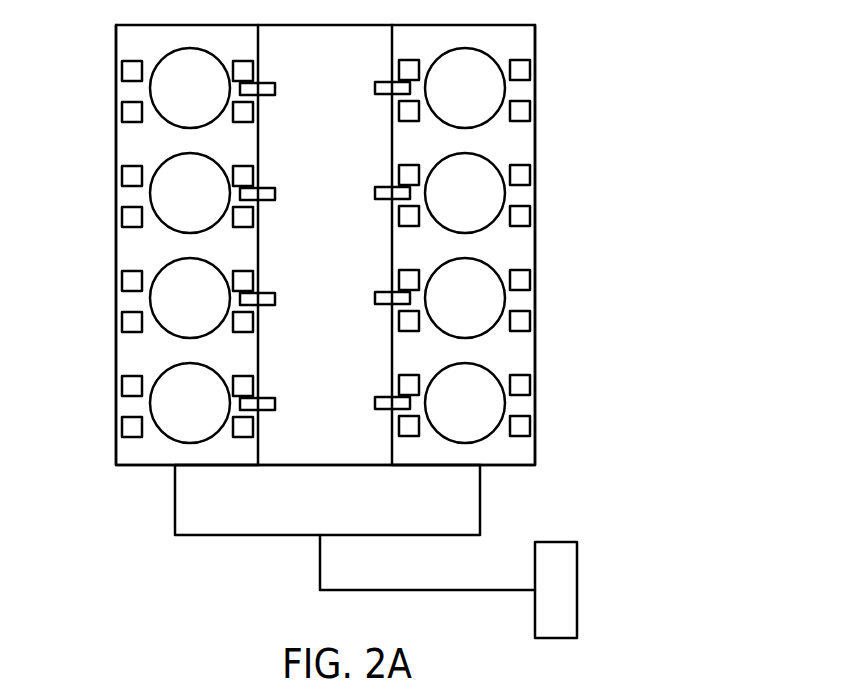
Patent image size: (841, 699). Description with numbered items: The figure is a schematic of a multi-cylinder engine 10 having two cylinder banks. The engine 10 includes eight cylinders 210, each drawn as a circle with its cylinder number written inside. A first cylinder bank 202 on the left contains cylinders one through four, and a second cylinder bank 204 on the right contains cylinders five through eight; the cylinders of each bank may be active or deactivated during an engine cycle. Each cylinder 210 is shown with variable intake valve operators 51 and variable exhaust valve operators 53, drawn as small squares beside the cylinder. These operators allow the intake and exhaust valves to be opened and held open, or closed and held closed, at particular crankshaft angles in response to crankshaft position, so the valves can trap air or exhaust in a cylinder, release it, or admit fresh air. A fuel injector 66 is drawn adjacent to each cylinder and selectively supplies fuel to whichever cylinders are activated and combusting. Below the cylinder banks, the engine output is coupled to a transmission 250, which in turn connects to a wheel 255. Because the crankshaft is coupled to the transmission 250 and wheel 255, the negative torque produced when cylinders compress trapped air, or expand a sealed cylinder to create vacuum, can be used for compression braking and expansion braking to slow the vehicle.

The engine 10 is at (630, 96).
The variable intake valve operator 51 is at (247, 70).
The variable exhaust valve operator 53 is at (132, 72).
The fuel injector 66 is at (267, 90).
The first cylinder bank 202 is at (106, 471).
The second cylinder bank 204 is at (545, 463).
The cylinder 210 is at (148, 86).
The transmission 250 is at (355, 527).
The wheel 255 is at (556, 590).